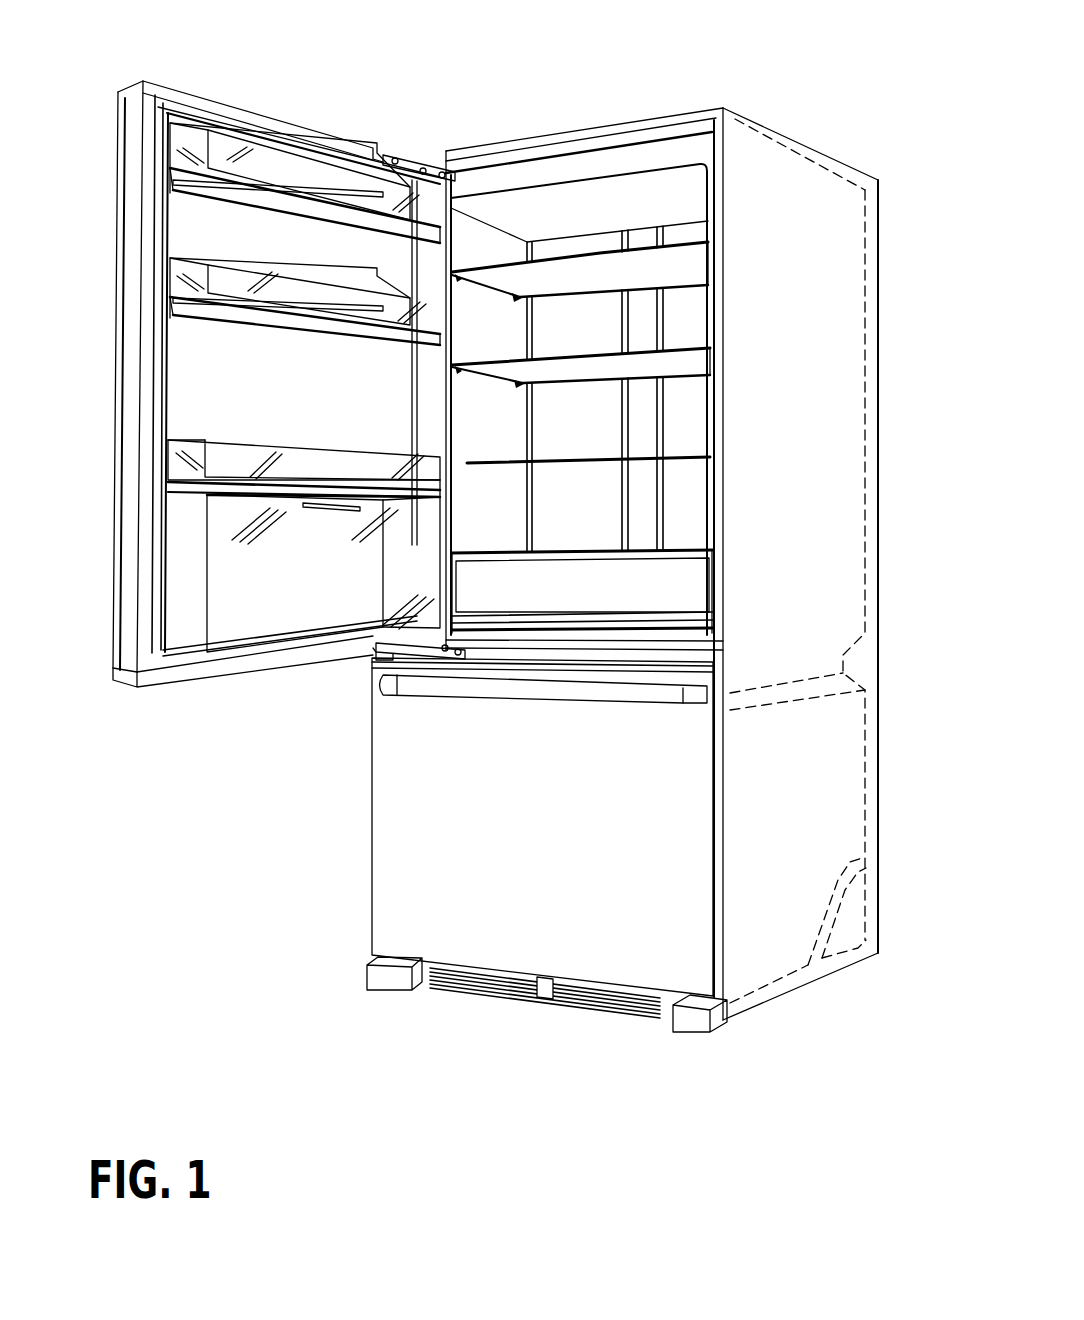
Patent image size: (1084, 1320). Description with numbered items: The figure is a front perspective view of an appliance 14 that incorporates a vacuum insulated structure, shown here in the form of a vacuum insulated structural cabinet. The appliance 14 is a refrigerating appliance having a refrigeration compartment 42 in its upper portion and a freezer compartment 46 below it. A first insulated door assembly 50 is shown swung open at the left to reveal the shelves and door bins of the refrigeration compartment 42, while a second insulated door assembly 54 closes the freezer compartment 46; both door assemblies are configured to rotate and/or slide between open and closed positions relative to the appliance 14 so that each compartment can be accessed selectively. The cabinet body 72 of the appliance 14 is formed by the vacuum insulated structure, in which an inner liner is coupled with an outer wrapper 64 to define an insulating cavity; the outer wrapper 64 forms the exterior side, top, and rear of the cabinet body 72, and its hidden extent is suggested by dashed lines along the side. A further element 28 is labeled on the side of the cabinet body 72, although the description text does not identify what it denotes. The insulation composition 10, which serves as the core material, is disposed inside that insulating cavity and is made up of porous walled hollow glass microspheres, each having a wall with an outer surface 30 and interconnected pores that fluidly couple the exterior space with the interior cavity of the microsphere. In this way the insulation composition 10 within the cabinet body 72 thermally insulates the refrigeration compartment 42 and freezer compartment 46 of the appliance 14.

The insulation composition 10 is at (838, 381).
The appliance 14 is at (829, 118).
The side wall 28 is at (880, 286).
The outer surface 30 is at (599, 203).
The refrigeration compartment 42 is at (693, 415).
The freezer compartment 46 is at (772, 935).
The first insulated door assembly 50 is at (112, 300).
The second insulated door assembly 54 is at (368, 799).
The outer wrapper 64 is at (853, 167).
The cabinet body 72 is at (883, 597).